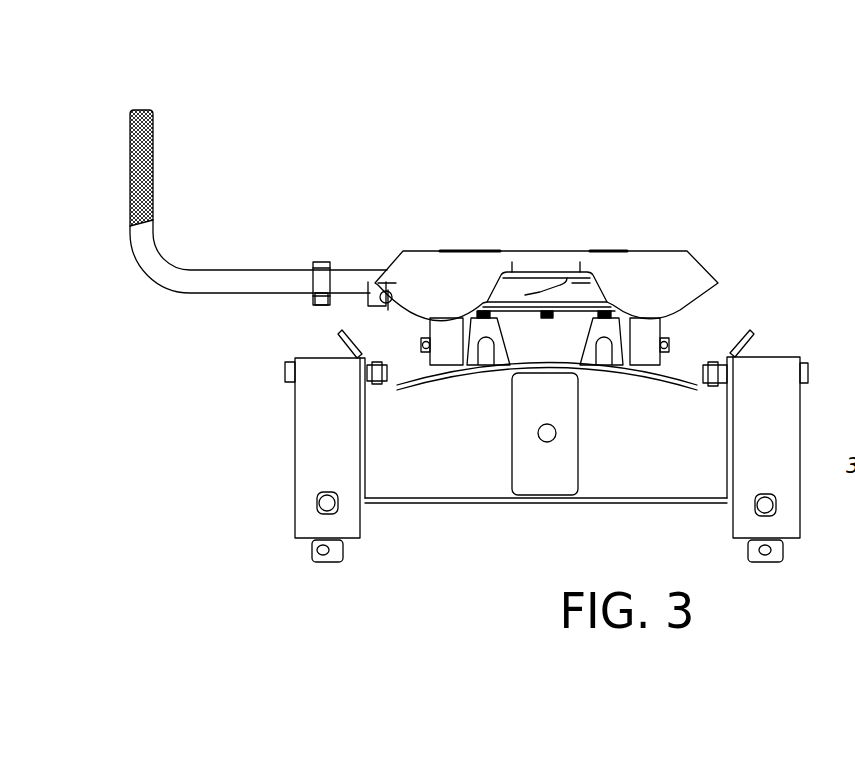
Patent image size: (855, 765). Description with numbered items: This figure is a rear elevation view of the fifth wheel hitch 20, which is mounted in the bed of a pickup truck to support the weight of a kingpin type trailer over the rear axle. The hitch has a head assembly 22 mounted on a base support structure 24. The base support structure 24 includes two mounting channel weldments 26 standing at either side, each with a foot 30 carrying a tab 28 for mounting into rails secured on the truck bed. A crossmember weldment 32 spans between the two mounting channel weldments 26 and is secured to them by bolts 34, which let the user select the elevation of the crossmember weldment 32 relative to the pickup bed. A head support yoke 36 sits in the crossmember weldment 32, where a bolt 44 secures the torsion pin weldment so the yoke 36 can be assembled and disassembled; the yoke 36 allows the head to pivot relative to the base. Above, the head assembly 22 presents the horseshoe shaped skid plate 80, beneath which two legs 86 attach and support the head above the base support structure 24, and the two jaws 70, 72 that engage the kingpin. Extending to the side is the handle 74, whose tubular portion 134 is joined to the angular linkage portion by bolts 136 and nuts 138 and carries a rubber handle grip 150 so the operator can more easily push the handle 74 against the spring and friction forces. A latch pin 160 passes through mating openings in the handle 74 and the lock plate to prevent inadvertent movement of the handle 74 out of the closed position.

The fifth wheel hitch 20 is at (640, 177).
The head assembly 22 is at (712, 250).
The base support structure 24 is at (206, 407).
The mounting channel weldment 26 is at (304, 445).
The tab 28 is at (347, 545).
The foot 30 is at (304, 510).
The crossmember weldment 32 is at (625, 443).
The bolt 34 is at (287, 377).
The head support yoke 36 is at (480, 332).
The bolt 44 is at (538, 437).
The jaw 70 is at (580, 285).
The driven jaw 72 is at (520, 288).
The handle 74 is at (250, 267).
The skid plate 80 is at (425, 258).
The leg 86 is at (645, 343).
The tubular portion 134 is at (160, 252).
The bolt 136 is at (320, 265).
The nut 138 is at (312, 298).
The rubber handle grip 150 is at (155, 168).
The latch pin 160 is at (366, 300).